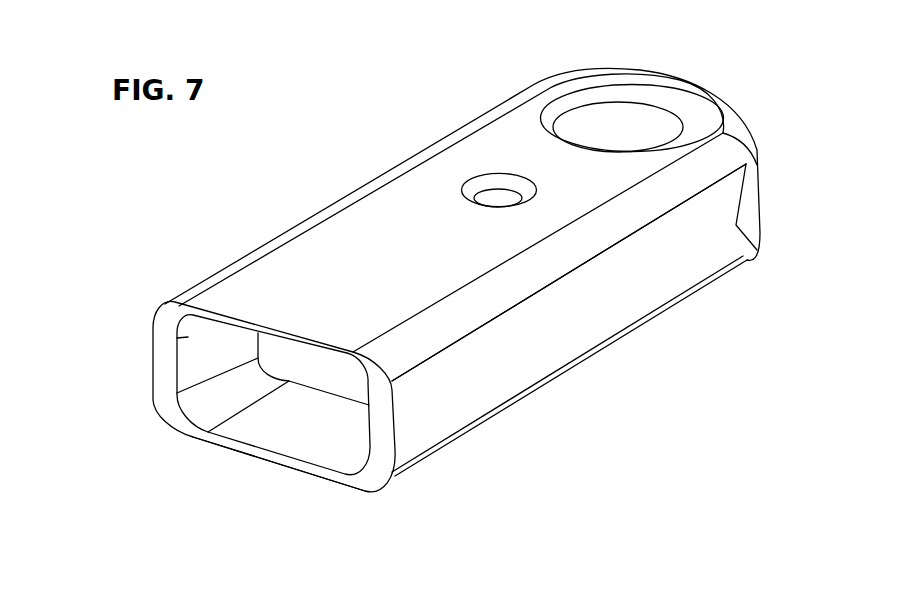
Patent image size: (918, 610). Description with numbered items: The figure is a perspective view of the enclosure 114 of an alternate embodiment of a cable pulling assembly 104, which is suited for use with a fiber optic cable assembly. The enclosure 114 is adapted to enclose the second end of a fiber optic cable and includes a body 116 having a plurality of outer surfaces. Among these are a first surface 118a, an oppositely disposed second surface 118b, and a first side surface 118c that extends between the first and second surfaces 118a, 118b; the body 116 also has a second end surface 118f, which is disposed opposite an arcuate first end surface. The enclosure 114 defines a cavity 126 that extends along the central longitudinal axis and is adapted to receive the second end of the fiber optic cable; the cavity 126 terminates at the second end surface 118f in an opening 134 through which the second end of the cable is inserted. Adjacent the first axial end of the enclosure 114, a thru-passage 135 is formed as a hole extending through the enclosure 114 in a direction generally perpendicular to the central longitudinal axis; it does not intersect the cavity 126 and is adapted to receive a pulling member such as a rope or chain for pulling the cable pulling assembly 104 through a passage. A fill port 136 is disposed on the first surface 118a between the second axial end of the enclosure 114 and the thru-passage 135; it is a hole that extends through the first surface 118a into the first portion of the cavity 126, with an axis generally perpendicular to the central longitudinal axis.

The cable pulling assembly 104 is at (393, 143).
The enclosure 114 is at (750, 98).
The body 116 is at (581, 333).
The first surface 118a is at (428, 251).
The second surface 118b is at (328, 481).
The first side surface 118c is at (644, 296).
The second end surface 118f is at (163, 368).
The cavity 126 is at (315, 423).
The opening 134 is at (264, 430).
The thru-passage 135 is at (628, 118).
The fill port 136 is at (497, 195).